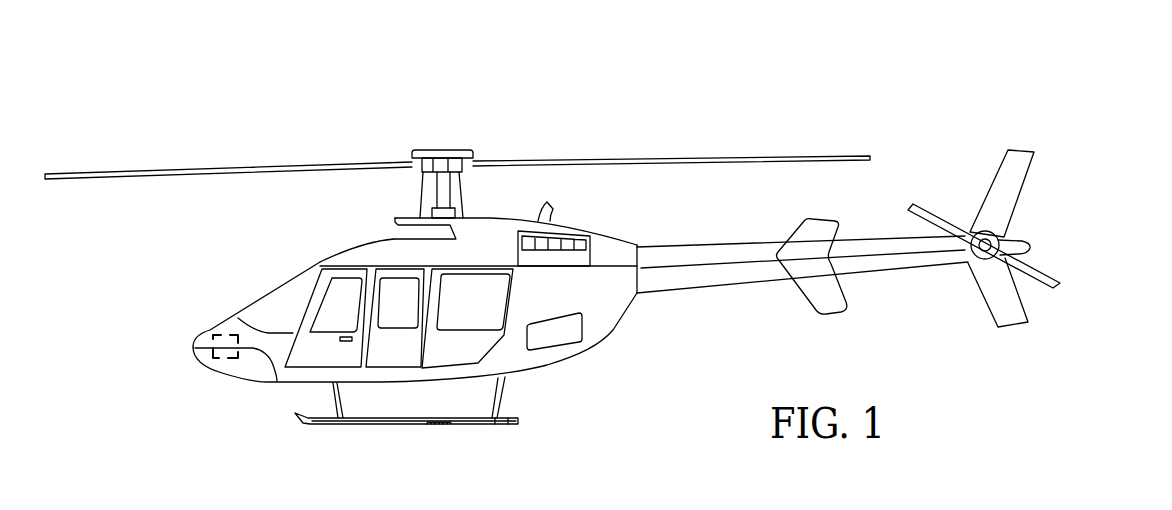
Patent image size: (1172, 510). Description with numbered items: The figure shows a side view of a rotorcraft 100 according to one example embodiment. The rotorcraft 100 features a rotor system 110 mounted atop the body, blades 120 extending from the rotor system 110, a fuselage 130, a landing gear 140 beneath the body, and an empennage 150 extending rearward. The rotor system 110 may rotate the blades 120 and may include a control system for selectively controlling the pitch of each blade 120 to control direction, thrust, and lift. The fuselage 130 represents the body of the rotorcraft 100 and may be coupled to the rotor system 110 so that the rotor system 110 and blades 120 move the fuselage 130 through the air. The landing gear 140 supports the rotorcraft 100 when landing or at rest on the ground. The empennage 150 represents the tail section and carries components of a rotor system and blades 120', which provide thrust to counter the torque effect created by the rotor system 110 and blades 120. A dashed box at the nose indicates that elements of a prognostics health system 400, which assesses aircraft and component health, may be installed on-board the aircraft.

The rotorcraft 100 is at (292, 106).
The rotor system 110 is at (440, 149).
The blades 120 is at (457, 139).
The blades 120' is at (1025, 238).
The fuselage 130 is at (236, 380).
The landing gear 140 is at (387, 424).
The empennage 150 is at (717, 289).
The prognostics health system 400 is at (220, 333).